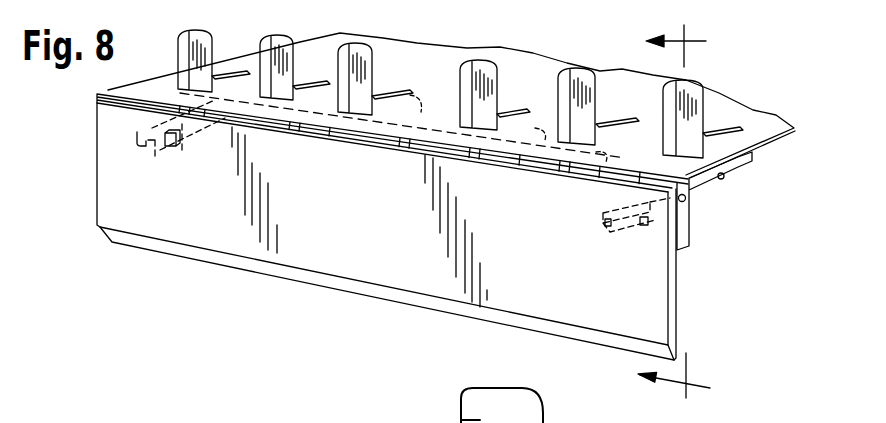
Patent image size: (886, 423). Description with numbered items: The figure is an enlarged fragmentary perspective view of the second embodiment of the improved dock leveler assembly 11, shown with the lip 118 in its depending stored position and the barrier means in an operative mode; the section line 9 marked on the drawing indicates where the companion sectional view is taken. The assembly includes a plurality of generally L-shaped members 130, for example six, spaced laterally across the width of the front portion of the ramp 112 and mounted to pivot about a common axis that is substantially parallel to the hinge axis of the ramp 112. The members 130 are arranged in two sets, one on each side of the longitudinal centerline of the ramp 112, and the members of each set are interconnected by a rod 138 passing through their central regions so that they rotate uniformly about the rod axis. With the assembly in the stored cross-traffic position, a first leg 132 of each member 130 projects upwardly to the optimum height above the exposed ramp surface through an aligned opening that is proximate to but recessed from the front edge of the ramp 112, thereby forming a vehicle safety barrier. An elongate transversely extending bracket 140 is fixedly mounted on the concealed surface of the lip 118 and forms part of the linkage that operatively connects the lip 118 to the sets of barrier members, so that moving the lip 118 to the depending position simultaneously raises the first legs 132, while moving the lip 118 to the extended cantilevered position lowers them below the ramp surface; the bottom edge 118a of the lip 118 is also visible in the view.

The dock leveler assembly 11 is at (425, 70).
The ramp 112 is at (519, 75).
The lip 118 is at (390, 226).
The panel bottom edge 118a is at (258, 276).
The generally L-shaped member 130 is at (686, 100).
The first leg 132 is at (578, 70).
The rod 138 is at (729, 157).
The bracket 140 is at (606, 232).
The section line 9- 9 is at (699, 221).